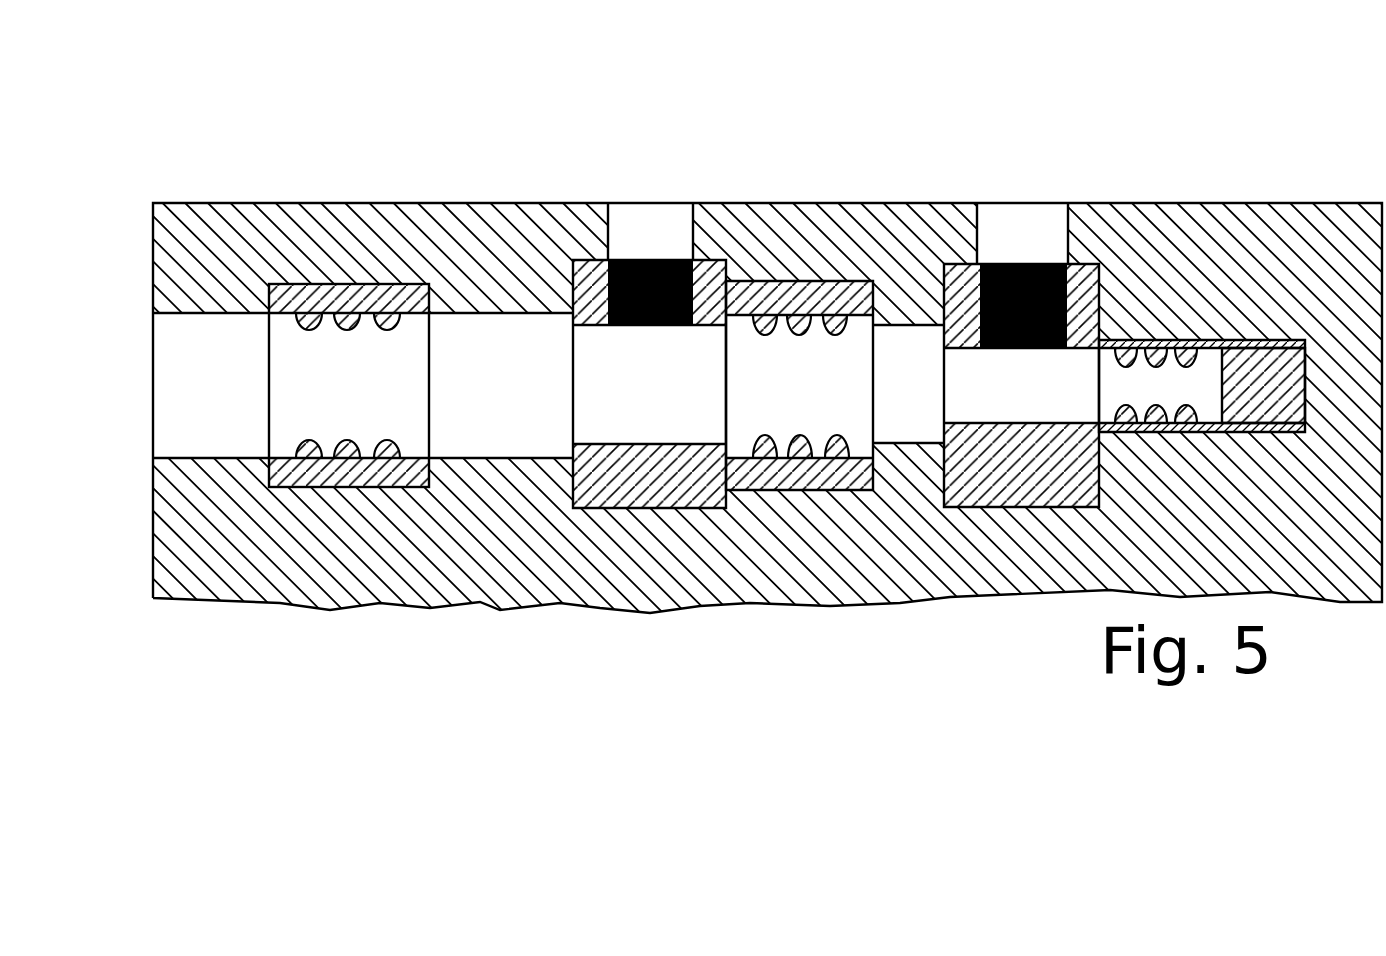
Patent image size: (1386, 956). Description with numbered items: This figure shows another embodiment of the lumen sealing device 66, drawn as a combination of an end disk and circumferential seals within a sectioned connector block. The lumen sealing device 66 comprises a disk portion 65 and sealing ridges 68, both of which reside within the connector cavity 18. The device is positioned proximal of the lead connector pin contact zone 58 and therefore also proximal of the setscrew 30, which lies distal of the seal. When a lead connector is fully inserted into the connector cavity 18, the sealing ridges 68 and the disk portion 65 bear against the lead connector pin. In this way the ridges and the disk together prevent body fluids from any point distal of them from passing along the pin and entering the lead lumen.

The connector cavity 18 is at (200, 313).
The setscrew 30 is at (1033, 263).
The lead connector pin contact zone 58 is at (1098, 434).
The lumen sealing device 66 is at (1331, 147).
The sealing ridges 68 is at (1187, 337).
The disk portion 65 is at (1310, 356).